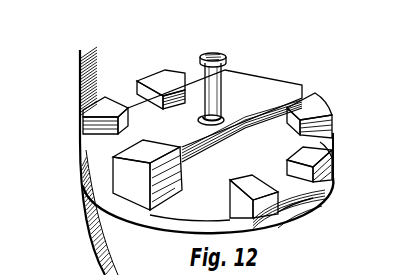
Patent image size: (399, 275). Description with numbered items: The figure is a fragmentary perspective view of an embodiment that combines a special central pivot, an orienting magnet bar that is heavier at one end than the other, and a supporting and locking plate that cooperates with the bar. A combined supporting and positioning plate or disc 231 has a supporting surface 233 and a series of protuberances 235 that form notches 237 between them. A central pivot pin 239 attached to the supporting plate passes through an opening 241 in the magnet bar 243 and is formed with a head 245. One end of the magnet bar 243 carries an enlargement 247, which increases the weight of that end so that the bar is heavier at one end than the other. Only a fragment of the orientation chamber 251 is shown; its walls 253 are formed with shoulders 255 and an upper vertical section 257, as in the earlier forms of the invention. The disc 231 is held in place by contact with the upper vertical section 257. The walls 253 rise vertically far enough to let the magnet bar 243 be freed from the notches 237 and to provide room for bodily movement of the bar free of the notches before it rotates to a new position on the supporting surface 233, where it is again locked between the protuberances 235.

The combined supporting and positioning plate 231 is at (341, 133).
The supporting surface 233 is at (328, 120).
The protuberances 235 is at (317, 162).
The notches 237 is at (293, 195).
The central pivot pin 239 is at (203, 95).
The opening 241 is at (185, 92).
The magnet bar 243 is at (270, 77).
The head 245 is at (216, 53).
The enlargement 247 is at (137, 162).
The orientation chamber 251 is at (79, 88).
The walls 253 is at (83, 130).
The shoulders 255 is at (83, 212).
The upper vertical section 257 is at (79, 58).